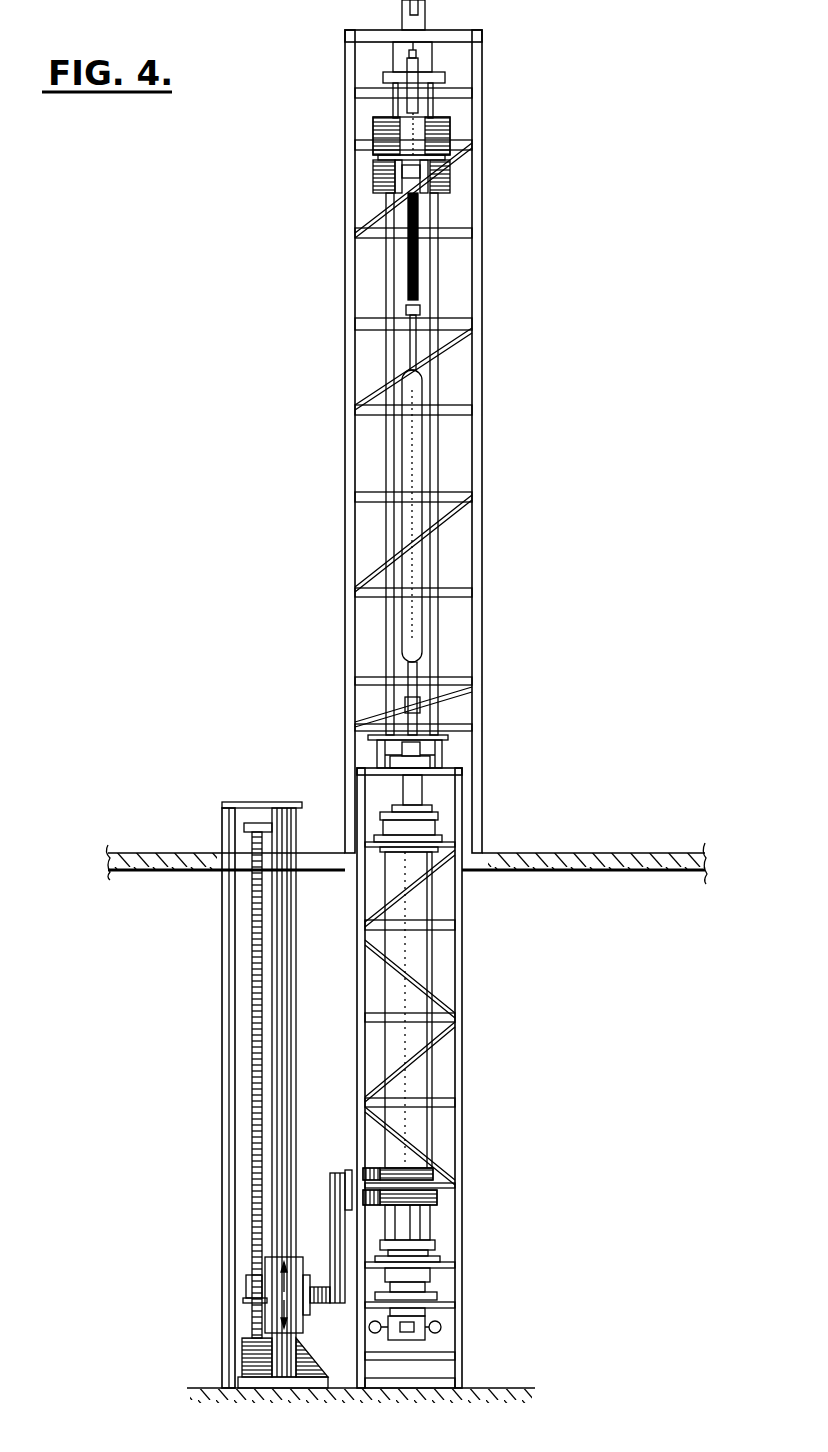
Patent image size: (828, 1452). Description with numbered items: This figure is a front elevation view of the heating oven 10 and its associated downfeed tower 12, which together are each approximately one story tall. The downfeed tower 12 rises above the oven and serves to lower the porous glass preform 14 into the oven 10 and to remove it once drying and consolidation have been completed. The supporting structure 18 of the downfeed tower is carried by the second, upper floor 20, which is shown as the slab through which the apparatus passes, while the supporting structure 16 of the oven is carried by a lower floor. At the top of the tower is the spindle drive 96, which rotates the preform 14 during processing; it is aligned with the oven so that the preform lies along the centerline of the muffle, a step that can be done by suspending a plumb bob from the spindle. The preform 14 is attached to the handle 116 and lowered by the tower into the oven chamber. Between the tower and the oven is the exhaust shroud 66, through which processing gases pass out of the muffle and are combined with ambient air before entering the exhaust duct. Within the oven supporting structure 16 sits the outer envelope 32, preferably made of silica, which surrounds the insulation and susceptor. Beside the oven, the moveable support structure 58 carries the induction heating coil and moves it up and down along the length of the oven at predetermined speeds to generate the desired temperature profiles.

The heating oven 10 is at (343, 1078).
The downfeed tower 12 is at (393, 426).
The porous glass preform 14 is at (410, 442).
The supporting structure 16 is at (462, 1123).
The supporting structure 18 is at (482, 208).
The upper floor 20 is at (640, 855).
The outer envelope 32 is at (420, 960).
The moveable support structure 58 is at (200, 1302).
The exhaust shroud 66 is at (430, 752).
The spindle drive 96 is at (420, 98).
The handle 116 is at (415, 310).